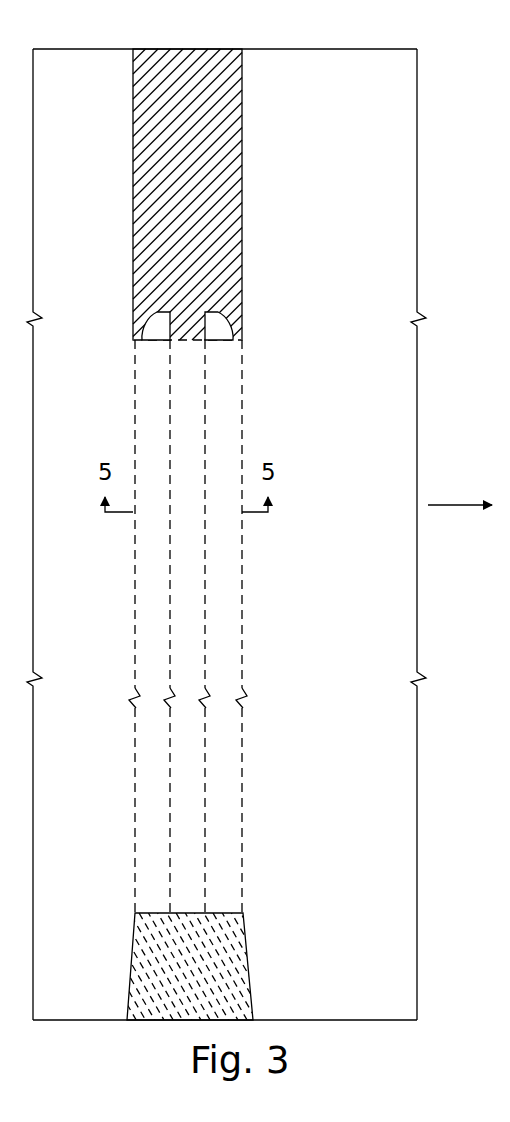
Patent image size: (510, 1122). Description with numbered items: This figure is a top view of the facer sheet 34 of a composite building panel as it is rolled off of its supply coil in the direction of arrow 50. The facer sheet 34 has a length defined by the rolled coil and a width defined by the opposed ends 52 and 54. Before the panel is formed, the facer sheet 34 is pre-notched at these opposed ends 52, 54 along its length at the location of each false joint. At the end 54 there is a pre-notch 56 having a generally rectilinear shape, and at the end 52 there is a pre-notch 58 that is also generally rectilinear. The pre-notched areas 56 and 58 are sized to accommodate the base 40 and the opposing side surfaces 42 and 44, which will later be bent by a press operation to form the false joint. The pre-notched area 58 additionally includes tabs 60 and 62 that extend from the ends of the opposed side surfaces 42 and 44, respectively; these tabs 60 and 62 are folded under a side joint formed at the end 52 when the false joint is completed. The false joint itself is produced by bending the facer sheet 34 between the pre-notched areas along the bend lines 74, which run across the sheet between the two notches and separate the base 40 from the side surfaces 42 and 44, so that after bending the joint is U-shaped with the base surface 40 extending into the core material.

The facer sheet 34 is at (359, 859).
The base 40 is at (200, 372).
The side surface 42 is at (153, 684).
The side surface 44 is at (228, 600).
The arrow 50 is at (447, 505).
The end 52 is at (365, 49).
The end 54 is at (340, 1020).
The pre-notch 56 is at (250, 970).
The pre-notch 58 is at (230, 151).
The tab 60 is at (155, 324).
The tab 62 is at (221, 322).
The bend lines 74 is at (242, 432).